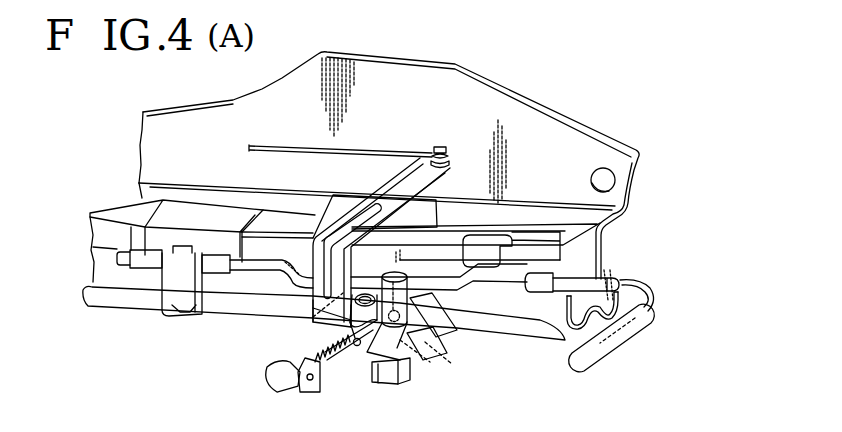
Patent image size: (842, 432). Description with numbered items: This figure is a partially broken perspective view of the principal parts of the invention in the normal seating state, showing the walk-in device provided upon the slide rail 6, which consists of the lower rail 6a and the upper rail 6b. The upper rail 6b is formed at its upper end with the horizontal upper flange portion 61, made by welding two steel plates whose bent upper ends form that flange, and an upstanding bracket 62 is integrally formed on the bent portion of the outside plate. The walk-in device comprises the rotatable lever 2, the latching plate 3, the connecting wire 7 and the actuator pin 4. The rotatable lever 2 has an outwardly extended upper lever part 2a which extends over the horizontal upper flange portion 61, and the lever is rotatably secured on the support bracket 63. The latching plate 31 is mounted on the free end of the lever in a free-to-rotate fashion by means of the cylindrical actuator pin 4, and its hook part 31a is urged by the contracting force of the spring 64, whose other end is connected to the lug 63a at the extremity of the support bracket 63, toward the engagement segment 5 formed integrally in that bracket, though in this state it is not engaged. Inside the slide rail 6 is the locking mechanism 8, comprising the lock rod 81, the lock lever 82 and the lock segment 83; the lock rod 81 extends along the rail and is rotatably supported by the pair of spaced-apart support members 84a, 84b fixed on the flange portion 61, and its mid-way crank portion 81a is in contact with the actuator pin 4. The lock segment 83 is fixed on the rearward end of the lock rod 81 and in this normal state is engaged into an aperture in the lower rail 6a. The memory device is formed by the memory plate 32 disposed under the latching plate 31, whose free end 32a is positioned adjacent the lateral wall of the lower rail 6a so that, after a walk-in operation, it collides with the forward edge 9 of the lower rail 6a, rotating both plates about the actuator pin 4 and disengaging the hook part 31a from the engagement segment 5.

The rotatable lever 2 is at (312, 297).
The upper lever part 2a is at (317, 318).
The latching plate 3 is at (412, 378).
The actuator pin 4 is at (368, 370).
The engagement segment 5 is at (407, 325).
The slide rail 6 is at (552, 372).
The lower rail 6a is at (551, 333).
The upper rail 6b is at (568, 340).
The connecting wire 7 is at (268, 143).
The locking mechanism 8 is at (247, 272).
The forward edge 9 is at (612, 288).
The latching plate 31 is at (404, 372).
The hook part 31a is at (428, 352).
The memory plate 32 is at (393, 388).
The free end 32a is at (440, 326).
The horizontal upper flange portion 61 is at (112, 212).
The upstanding bracket 62 is at (495, 102).
The support bracket 63 is at (268, 385).
The lug 63a is at (312, 392).
The spring 64 is at (318, 372).
The lock rod 81 is at (262, 272).
The crank portion 81a is at (302, 278).
The lock lever 82 is at (598, 363).
The lock segment 83 is at (176, 300).
The support member 84a is at (548, 278).
The support member 84b is at (141, 270).